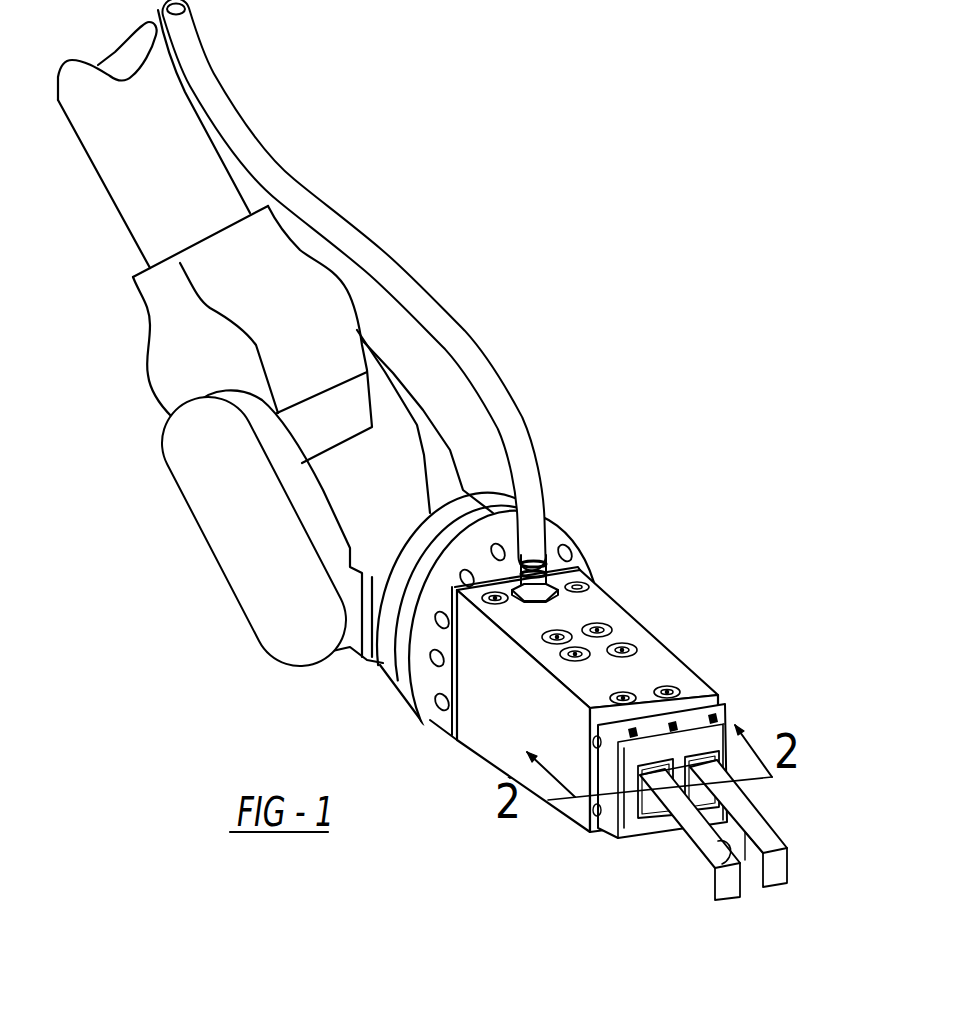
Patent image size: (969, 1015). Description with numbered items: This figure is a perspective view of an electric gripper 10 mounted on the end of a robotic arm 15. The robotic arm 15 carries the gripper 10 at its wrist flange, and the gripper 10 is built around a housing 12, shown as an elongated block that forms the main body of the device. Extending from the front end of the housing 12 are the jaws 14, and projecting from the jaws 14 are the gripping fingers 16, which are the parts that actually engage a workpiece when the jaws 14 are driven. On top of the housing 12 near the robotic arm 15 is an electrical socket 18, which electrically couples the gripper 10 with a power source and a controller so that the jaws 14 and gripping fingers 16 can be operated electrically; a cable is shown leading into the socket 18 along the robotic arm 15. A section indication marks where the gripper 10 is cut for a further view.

The electric gripper 10 is at (477, 491).
The housing 12 is at (527, 740).
The jaws 14 is at (598, 800).
The robotic arm 15 is at (138, 397).
The gripping fingers 16 is at (682, 878).
The electrical socket 18 is at (573, 578).